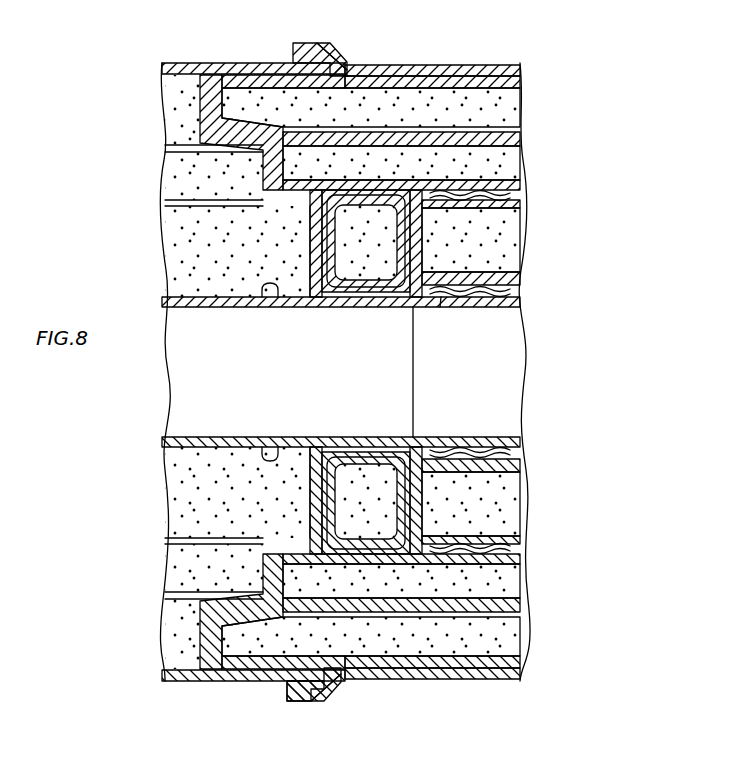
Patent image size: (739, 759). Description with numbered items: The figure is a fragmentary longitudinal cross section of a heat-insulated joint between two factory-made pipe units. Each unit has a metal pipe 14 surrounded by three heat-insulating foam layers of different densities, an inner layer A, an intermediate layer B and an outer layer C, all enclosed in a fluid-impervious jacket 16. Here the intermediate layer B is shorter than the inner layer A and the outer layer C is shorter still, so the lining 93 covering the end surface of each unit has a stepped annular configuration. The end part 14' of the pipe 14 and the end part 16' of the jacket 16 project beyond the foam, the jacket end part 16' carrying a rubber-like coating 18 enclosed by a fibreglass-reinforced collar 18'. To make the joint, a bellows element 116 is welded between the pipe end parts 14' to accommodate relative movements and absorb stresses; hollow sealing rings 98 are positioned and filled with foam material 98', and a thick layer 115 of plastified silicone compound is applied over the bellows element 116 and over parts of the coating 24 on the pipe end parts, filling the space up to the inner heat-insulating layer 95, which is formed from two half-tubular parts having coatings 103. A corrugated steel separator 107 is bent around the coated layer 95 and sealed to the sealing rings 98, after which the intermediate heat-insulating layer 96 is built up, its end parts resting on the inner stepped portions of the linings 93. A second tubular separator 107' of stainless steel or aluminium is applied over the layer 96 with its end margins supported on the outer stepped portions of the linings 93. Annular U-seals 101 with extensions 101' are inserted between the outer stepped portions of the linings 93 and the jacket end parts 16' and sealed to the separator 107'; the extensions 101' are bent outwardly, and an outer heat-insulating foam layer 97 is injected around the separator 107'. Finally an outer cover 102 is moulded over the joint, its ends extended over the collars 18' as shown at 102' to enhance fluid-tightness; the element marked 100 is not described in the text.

The jacket 16 is at (253, 52).
The end part of jacket 16' is at (360, 49).
The rubber-like coating 18 is at (300, 379).
The collar 18' is at (346, 700).
The annular U-seal 101 is at (272, 110).
The extension of U-seal 101' is at (432, 59).
The outer cover 102 is at (432, 53).
The extended end of outer cover 102' is at (308, 715).
The outer heat-insulating foam layer 97 is at (490, 98).
The second tubular separator 107' is at (433, 135).
The intermediate heat-insulating layer 96 is at (500, 166).
The separator 107 is at (433, 200).
The inner heat-insulating layer 95 is at (500, 254).
The metal pipe 14 is at (341, 319).
The end part of pipe 14' is at (341, 426).
The coating 24 is at (262, 300).
The lining 93 is at (318, 297).
The hollow sealing ring 98 is at (372, 265).
The foam material 98' is at (379, 372).
The bellows element 116 is at (492, 296).
The layer of plastified silicone compound 115 is at (440, 307).
The coating 103 is at (500, 460).
The plate 100 is at (512, 602).
The inner heat-insulating foam layer A is at (182, 236).
The intermediate heat-insulating foam layer B is at (175, 174).
The outer heat-insulating foam layer C is at (168, 98).